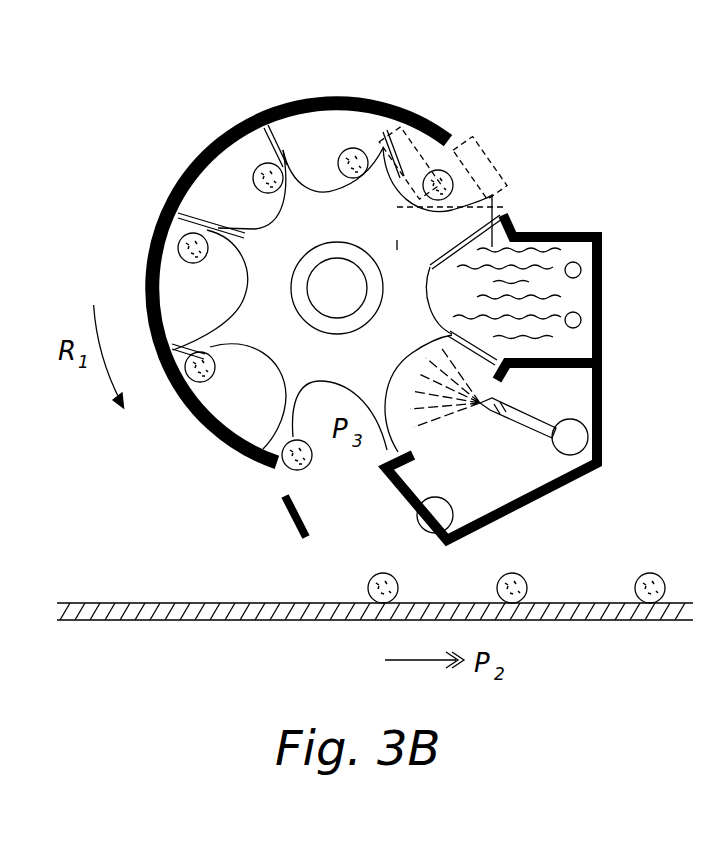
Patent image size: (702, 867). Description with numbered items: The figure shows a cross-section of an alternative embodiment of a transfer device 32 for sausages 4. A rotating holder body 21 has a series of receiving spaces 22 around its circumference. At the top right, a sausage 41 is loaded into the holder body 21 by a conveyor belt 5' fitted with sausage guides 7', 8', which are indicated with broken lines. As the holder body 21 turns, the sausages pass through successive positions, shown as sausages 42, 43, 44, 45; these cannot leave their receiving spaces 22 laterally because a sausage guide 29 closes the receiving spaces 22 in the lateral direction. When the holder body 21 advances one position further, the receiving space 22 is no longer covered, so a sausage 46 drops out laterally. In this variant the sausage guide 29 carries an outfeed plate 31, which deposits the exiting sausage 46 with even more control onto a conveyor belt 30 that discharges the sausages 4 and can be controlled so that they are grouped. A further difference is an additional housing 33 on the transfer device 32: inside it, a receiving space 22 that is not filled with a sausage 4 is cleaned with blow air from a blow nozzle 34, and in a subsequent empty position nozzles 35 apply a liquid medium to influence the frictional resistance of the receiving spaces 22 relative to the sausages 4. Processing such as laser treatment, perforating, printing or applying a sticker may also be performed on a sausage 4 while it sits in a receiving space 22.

The sausage 4 is at (525, 578).
The sausage 41 is at (440, 182).
The sausage 42 is at (353, 160).
The sausage 43 is at (266, 176).
The sausage 44 is at (185, 245).
The sausage 45 is at (200, 372).
The sausage 46 is at (293, 458).
The conveyor belt 5' is at (365, 228).
The sausage guide 7' is at (495, 165).
The sausage guide 8' is at (421, 115).
The holder body 21 is at (290, 353).
The receiving space 22 is at (243, 207).
The sausage guide 29 is at (150, 268).
The conveyor belt 30 is at (197, 612).
The outfeed plate 31 is at (293, 520).
The transfer device 32 is at (170, 150).
The housing 33 is at (602, 390).
The blow nozzle 34 is at (525, 430).
The nozzles 35 is at (582, 320).